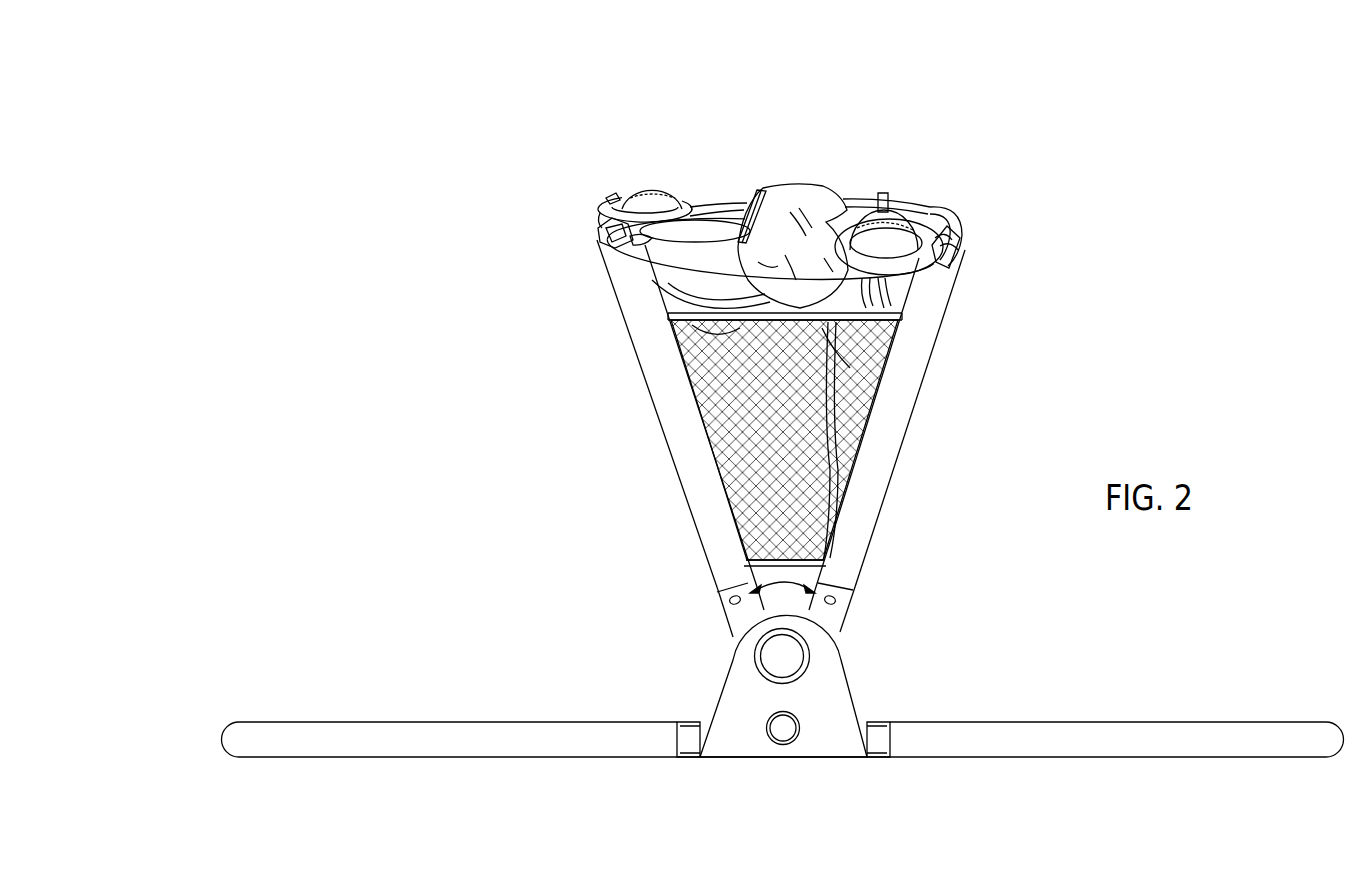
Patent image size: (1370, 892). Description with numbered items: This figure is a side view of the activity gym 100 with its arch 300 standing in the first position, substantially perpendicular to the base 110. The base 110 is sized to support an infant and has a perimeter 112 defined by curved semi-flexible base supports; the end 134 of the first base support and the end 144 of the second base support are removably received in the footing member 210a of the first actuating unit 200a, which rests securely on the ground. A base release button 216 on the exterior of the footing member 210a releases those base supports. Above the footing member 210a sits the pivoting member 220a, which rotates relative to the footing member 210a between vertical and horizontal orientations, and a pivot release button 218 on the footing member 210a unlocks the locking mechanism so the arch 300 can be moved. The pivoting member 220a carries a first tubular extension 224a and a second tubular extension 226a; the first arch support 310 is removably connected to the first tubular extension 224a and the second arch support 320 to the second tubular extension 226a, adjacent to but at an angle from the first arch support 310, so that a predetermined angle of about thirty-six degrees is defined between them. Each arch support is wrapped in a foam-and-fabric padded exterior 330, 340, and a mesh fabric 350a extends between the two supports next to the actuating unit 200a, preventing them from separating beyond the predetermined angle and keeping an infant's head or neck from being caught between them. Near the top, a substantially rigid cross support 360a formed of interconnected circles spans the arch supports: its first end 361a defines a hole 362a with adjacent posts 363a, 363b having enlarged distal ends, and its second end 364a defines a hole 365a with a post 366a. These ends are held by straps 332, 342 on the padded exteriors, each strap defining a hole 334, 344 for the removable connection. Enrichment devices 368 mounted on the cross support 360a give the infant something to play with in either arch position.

The activity gym 100 is at (519, 146).
The base 110 is at (372, 722).
The perimeter 112 is at (222, 746).
The end 134 is at (685, 757).
The end 144 is at (880, 757).
The first actuating unit 200a is at (735, 752).
The footing member 210a is at (815, 757).
The base release button 216 is at (783, 733).
The pivot release button 218 is at (778, 657).
The pivoting member 220a is at (728, 627).
The first tubular extension 224a is at (727, 594).
The second tubular extension 226a is at (838, 632).
The arch 300 is at (936, 340).
The first arch support 310 is at (648, 368).
The second arch support 320 is at (920, 392).
The padded exterior 330 is at (675, 476).
The padded exterior 340 is at (906, 443).
The mesh fabric 350a is at (797, 477).
The cross support 360a is at (712, 216).
The first end 361a is at (640, 235).
The hole 362a is at (672, 206).
The post 363a is at (605, 233).
The post 363b is at (613, 197).
The second end 364a is at (928, 222).
The hole 365a is at (948, 232).
The post 366a is at (957, 233).
The enrichment device 368 is at (653, 184).
The strap 332 is at (612, 242).
The hole 334 is at (606, 232).
The strap 342 is at (958, 265).
The hole 344 is at (963, 237).